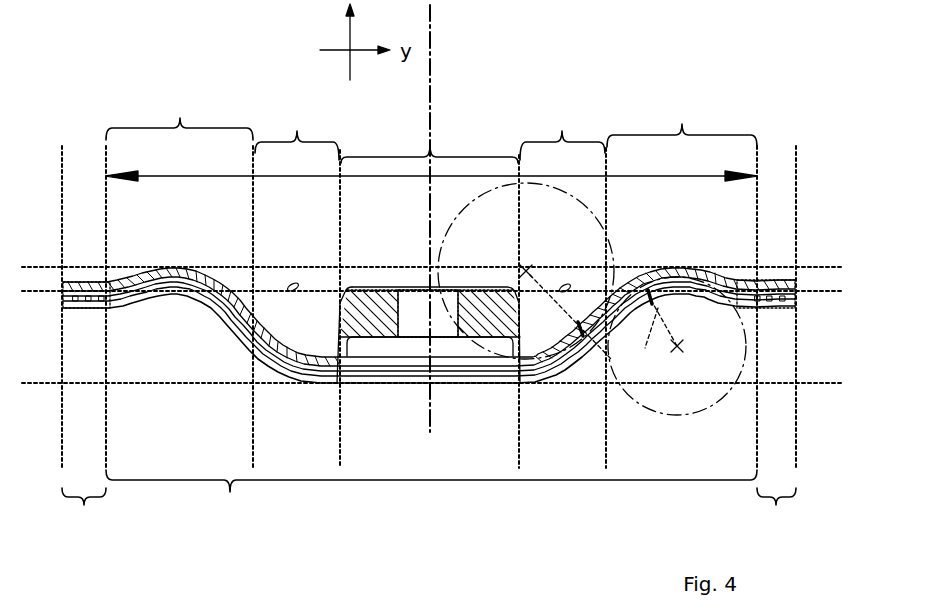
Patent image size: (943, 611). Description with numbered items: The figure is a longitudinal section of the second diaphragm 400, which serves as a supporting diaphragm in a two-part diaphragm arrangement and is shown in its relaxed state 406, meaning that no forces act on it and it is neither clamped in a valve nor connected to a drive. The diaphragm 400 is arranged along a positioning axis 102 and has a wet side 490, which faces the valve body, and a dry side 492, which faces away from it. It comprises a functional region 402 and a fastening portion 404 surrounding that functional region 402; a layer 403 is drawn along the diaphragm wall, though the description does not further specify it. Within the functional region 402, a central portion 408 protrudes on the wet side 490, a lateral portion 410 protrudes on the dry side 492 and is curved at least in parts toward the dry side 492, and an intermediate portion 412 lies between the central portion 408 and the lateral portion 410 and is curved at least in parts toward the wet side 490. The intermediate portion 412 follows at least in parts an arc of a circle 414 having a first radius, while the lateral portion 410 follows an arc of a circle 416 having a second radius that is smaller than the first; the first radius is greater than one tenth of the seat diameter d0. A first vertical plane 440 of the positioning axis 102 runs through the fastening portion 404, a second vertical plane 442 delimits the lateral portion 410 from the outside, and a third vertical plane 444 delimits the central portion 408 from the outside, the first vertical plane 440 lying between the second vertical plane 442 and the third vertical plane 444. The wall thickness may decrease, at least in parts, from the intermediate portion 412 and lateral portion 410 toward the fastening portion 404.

The second diaphragm 400 is at (115, 80).
The functional region 402 is at (429, 399).
The top layer of membrane 403 is at (222, 318).
The fastening portion 404 is at (429, 413).
The relaxed state 406 is at (295, 218).
The central portion 408 is at (428, 245).
The lateral portion 410 is at (431, 117).
The intermediate portion 412 is at (430, 130).
The arc of a circle 414 is at (530, 183).
The arc of a circle 416 is at (694, 412).
The first vertical plane 440 is at (838, 292).
The second vertical plane 442 is at (821, 265).
The third vertical plane 444 is at (829, 388).
The wet side 490 is at (196, 388).
The dry side 492 is at (727, 100).
The positioning axis 102 is at (432, 55).
The seat diameter d0 is at (214, 176).